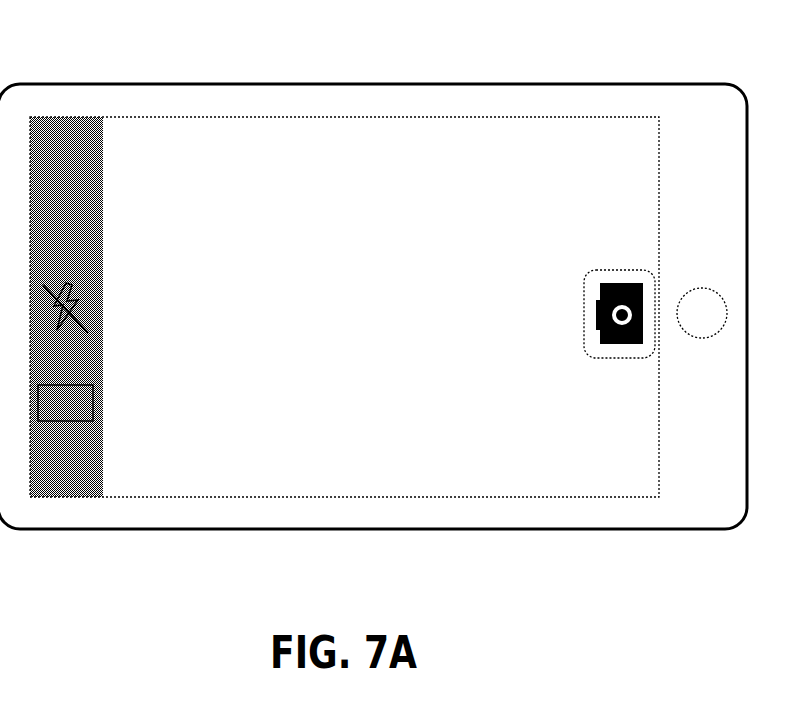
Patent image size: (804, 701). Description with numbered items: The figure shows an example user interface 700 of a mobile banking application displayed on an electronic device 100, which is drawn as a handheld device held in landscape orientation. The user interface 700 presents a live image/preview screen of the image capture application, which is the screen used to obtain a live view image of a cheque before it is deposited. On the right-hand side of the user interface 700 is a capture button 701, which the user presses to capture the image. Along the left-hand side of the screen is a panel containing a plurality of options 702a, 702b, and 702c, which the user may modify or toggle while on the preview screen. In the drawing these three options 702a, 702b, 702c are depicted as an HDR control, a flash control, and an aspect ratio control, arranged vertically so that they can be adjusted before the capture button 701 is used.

The electronic device 100 is at (97, 87).
The user interface 700 is at (499, 128).
The capture button 701 is at (592, 347).
The option 702a is at (87, 244).
The option 702b is at (80, 292).
The option 702c is at (98, 398).